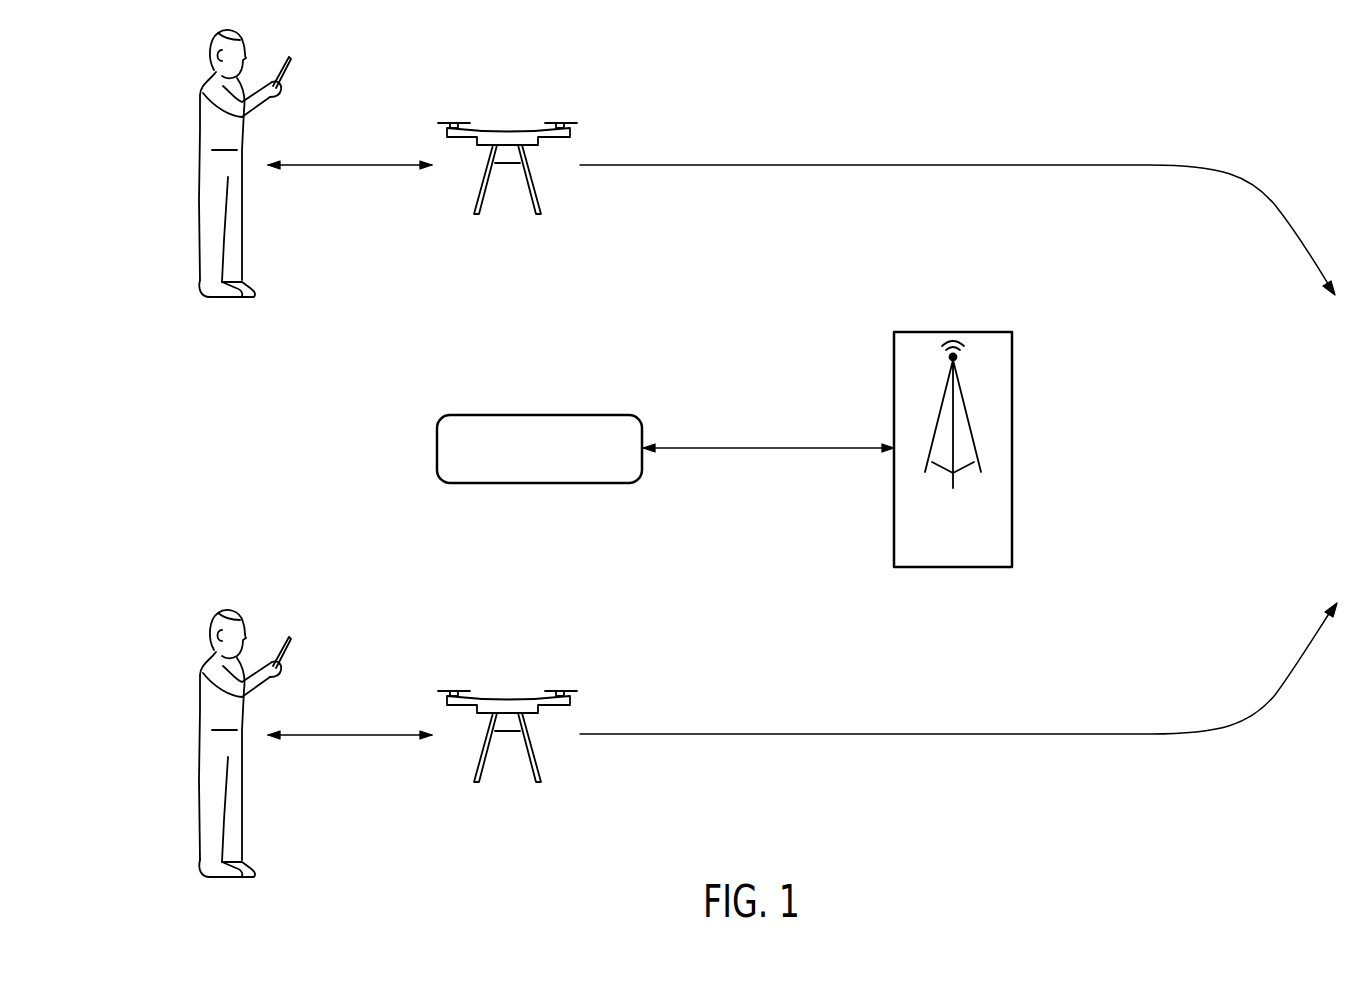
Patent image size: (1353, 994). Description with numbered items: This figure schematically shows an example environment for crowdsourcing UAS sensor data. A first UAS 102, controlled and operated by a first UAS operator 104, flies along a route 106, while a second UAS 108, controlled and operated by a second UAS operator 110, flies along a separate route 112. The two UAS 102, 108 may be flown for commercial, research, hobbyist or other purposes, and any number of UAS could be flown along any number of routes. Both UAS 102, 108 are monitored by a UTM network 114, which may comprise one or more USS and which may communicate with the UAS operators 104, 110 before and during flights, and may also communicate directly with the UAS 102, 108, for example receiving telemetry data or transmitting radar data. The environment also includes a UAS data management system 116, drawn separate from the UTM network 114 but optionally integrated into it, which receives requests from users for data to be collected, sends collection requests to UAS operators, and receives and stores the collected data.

The first UAS 102 is at (572, 133).
The first UAS operator 104 is at (200, 129).
The route 106 is at (1025, 152).
The second UAS 108 is at (572, 701).
The second UAS operator 110 is at (200, 709).
The route 112 is at (1023, 745).
The UTM network 114 is at (952, 332).
The UAS data management system 116 is at (538, 415).